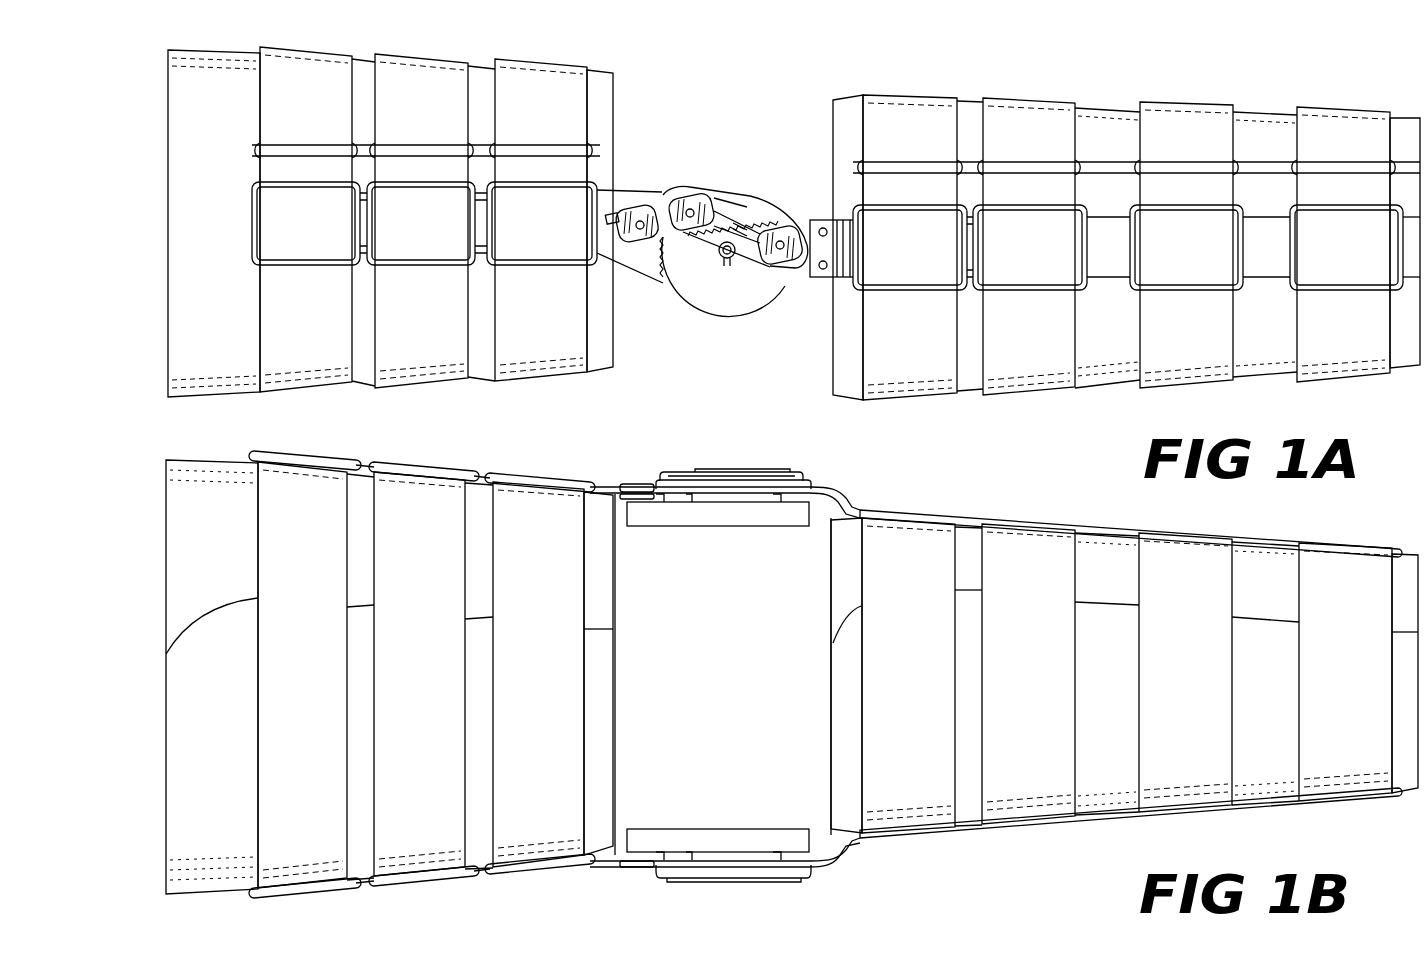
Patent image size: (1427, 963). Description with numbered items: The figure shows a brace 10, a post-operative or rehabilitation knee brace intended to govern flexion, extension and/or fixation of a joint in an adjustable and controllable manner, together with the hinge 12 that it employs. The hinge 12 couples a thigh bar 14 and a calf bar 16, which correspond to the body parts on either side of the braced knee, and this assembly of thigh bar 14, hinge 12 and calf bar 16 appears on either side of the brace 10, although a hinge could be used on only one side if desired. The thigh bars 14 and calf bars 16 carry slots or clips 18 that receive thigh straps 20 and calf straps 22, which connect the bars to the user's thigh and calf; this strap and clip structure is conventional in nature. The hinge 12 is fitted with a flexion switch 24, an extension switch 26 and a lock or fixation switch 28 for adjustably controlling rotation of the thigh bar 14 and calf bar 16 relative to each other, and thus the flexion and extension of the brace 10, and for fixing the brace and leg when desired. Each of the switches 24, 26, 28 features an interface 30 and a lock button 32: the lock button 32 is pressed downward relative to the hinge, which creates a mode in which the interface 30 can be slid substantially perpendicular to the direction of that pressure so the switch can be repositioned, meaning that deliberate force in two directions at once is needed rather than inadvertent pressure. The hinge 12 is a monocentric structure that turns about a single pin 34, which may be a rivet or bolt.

In FIG. 1A, the brace 10 is at (1050, 407).
In FIG. 1B, the brace 10 is at (1052, 850).
In FIG. 1A, the hinge 12 is at (723, 254).
In FIG. 1B, the hinge 12 is at (737, 665).
In FIG. 1A, the thigh bar 14 is at (560, 235).
In FIG. 1B, the thigh bar 14 is at (326, 458).
In FIG. 1A, the calf bar 16 is at (1205, 260).
In FIG. 1B, the calf bar 16 is at (1325, 545).
In FIG. 1A, the slots or clips 18 is at (292, 268).
In FIG. 1B, the slots or clips 18 is at (431, 466).
In FIG. 1A, the thigh strap 20 is at (322, 113).
In FIG. 1B, the thigh strap 20 is at (321, 560).
In FIG. 1A, the calf strap 22 is at (1204, 154).
In FIG. 1B, the calf strap 22 is at (1207, 633).
In FIG. 1A, the flexion switch 24 is at (787, 228).
In FIG. 1B, the flexion switch 24 is at (779, 469).
In FIG. 1A, the extension switch 26 is at (705, 202).
In FIG. 1B, the extension switch 26 is at (691, 472).
In FIG. 1A, the lock or fixation switch 28 is at (640, 222).
In FIG. 1B, the lock or fixation switch 28 is at (640, 483).
In FIG. 1A, the interface 30 is at (770, 267).
In FIG. 1A, the lock button 32 is at (687, 228).
In FIG. 1A, the pin 34 is at (727, 262).